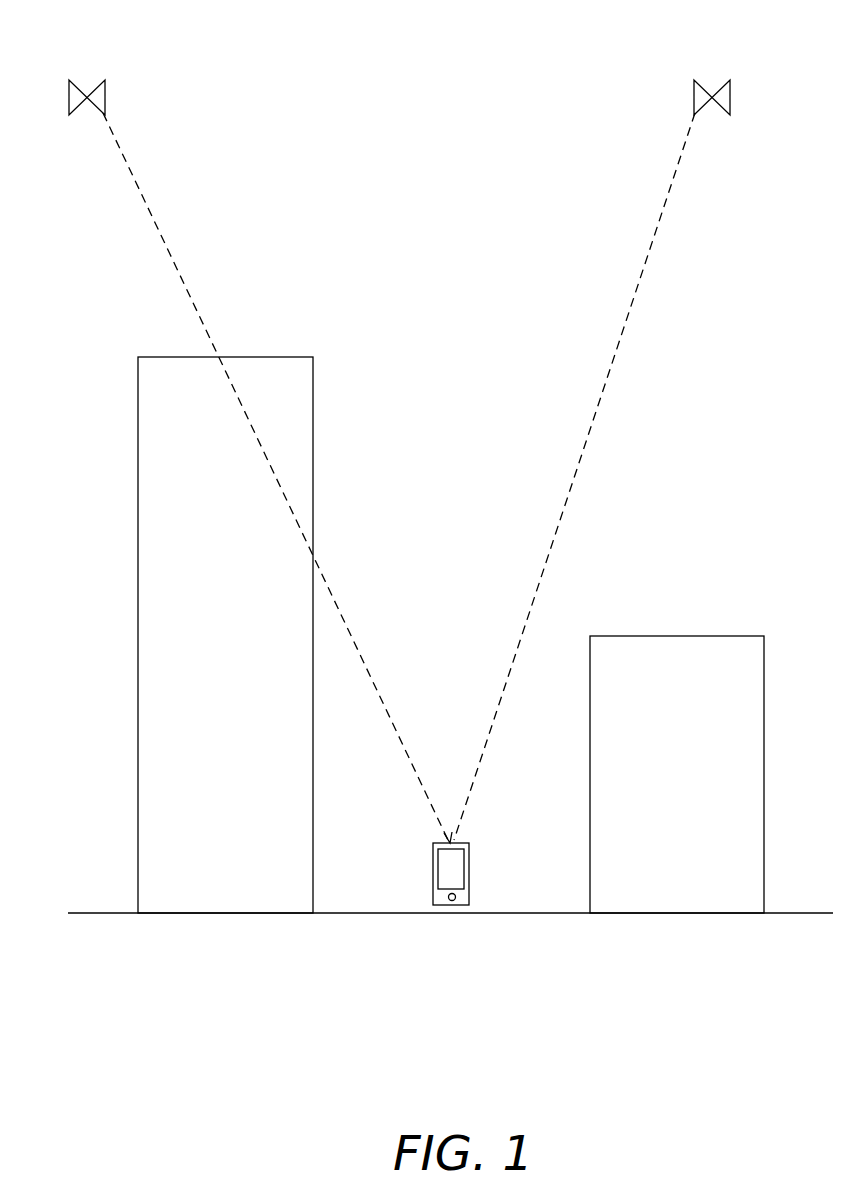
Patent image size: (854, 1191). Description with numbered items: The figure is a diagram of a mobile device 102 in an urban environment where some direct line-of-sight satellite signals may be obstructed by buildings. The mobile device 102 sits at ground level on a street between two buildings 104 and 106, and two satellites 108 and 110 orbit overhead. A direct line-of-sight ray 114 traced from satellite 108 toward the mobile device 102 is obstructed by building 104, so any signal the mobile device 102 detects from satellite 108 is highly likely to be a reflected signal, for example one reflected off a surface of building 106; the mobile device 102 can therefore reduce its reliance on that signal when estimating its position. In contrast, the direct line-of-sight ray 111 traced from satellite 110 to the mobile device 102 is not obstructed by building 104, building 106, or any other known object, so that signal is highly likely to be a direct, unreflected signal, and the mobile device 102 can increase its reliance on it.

The mobile device 102 is at (452, 913).
The building 104 is at (150, 357).
The building 106 is at (747, 636).
The satellite 108 is at (101, 80).
The satellite 110 is at (724, 80).
The line-of-sight signal path 111 is at (628, 315).
The signal path through building 114 is at (420, 783).